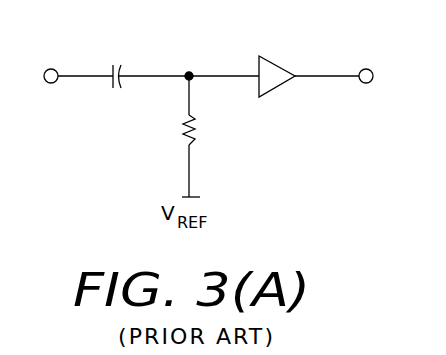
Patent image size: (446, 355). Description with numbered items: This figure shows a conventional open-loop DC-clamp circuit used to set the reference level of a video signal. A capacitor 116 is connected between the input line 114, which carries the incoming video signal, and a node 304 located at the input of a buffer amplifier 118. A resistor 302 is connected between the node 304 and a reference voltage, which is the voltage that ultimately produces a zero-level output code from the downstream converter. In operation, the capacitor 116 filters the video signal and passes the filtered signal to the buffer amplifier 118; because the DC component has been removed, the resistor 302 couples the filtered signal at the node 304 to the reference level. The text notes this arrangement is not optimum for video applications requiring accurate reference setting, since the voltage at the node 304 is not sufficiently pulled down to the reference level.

The input line 114 is at (53, 68).
The capacitor 116 is at (118, 64).
The buffer amplifier 118 is at (263, 55).
The resistor 302 is at (194, 130).
The node 304 is at (187, 82).